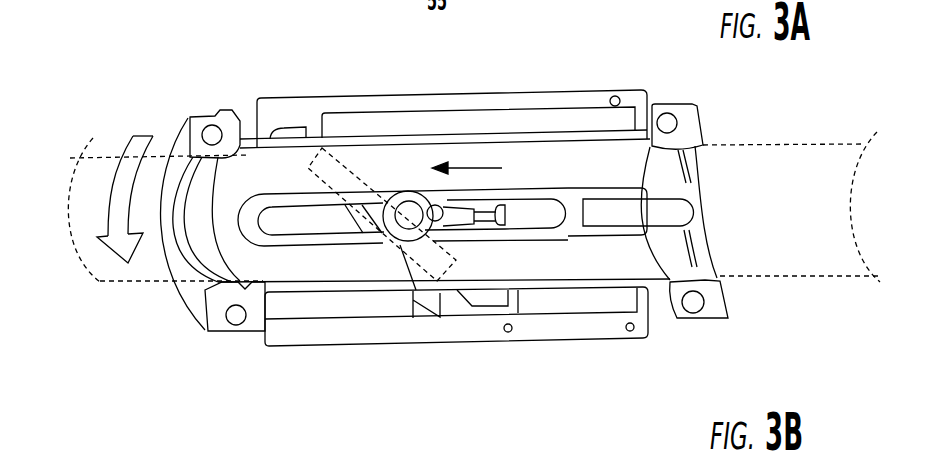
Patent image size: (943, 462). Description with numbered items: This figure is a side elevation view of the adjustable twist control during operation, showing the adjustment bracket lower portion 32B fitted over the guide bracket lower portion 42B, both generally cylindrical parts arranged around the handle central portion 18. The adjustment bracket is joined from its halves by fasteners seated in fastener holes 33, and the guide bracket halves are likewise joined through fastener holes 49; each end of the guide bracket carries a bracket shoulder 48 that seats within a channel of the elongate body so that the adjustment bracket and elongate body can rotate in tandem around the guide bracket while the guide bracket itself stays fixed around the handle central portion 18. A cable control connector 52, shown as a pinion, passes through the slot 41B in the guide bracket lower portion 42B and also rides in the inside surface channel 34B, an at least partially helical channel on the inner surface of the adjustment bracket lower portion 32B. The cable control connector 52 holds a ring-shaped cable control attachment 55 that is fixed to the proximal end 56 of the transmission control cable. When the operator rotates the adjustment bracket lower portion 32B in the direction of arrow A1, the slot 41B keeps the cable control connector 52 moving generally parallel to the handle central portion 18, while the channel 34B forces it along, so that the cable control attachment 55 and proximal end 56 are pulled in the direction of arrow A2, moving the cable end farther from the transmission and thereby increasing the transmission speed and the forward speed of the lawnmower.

The handle central portion 18 is at (120, 273).
The arrow A1 is at (116, 142).
The arrow A2 is at (462, 163).
The fastener holes 33 is at (615, 96).
The bracket shoulder 48 is at (700, 110).
The fastener holes 49 is at (668, 123).
The slot 41B is at (289, 214).
The guide bracket lower portion 42B is at (306, 262).
The cable control connector 52 is at (431, 208).
The proximal end 56 is at (518, 210).
The inside surface channel 34B is at (434, 260).
The cable control attachment 55 is at (398, 243).
The adjustment bracket lower portion 32B is at (573, 327).